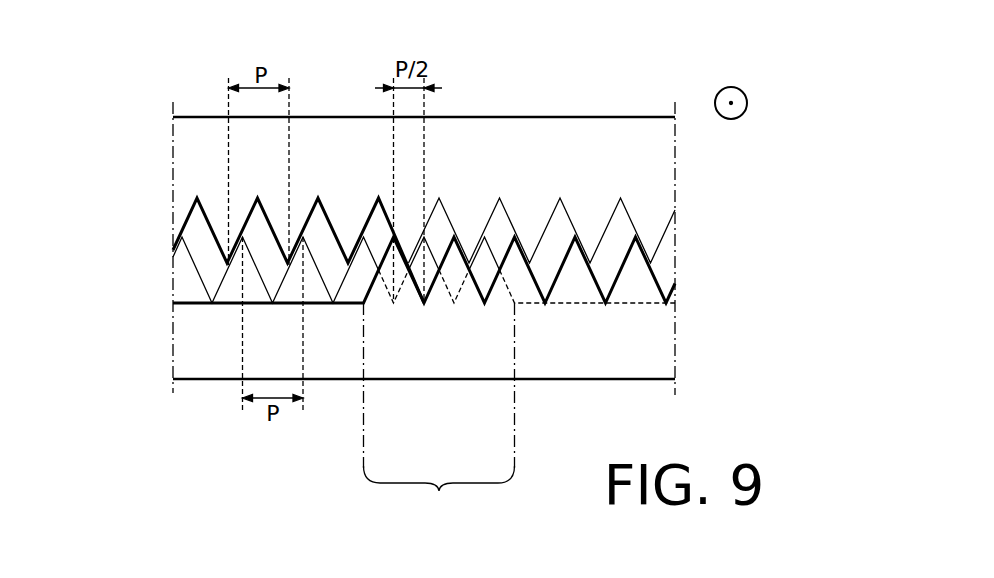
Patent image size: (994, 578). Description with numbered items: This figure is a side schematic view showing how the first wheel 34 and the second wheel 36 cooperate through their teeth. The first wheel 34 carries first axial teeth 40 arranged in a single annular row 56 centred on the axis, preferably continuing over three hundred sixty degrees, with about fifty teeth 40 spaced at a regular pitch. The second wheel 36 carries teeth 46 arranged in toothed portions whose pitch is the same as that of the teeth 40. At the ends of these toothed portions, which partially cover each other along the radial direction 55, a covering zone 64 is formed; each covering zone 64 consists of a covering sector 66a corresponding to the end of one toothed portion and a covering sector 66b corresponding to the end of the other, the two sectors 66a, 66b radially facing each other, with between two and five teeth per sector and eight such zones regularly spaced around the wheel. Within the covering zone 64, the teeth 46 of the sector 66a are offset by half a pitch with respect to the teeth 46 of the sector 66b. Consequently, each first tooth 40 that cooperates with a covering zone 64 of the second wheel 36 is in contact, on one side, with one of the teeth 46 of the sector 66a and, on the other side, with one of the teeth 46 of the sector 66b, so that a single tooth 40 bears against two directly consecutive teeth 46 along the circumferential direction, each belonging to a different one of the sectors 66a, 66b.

The first wheel 34 is at (622, 117).
The second wheel 36 is at (195, 382).
The first axial teeth 40 is at (177, 213).
The teeth 46 is at (187, 275).
The radial direction 55 is at (731, 103).
The annular row 56 is at (610, 222).
The covering zone 64 is at (439, 413).
The covering sector 66a is at (405, 288).
The covering sector 66b is at (505, 277).